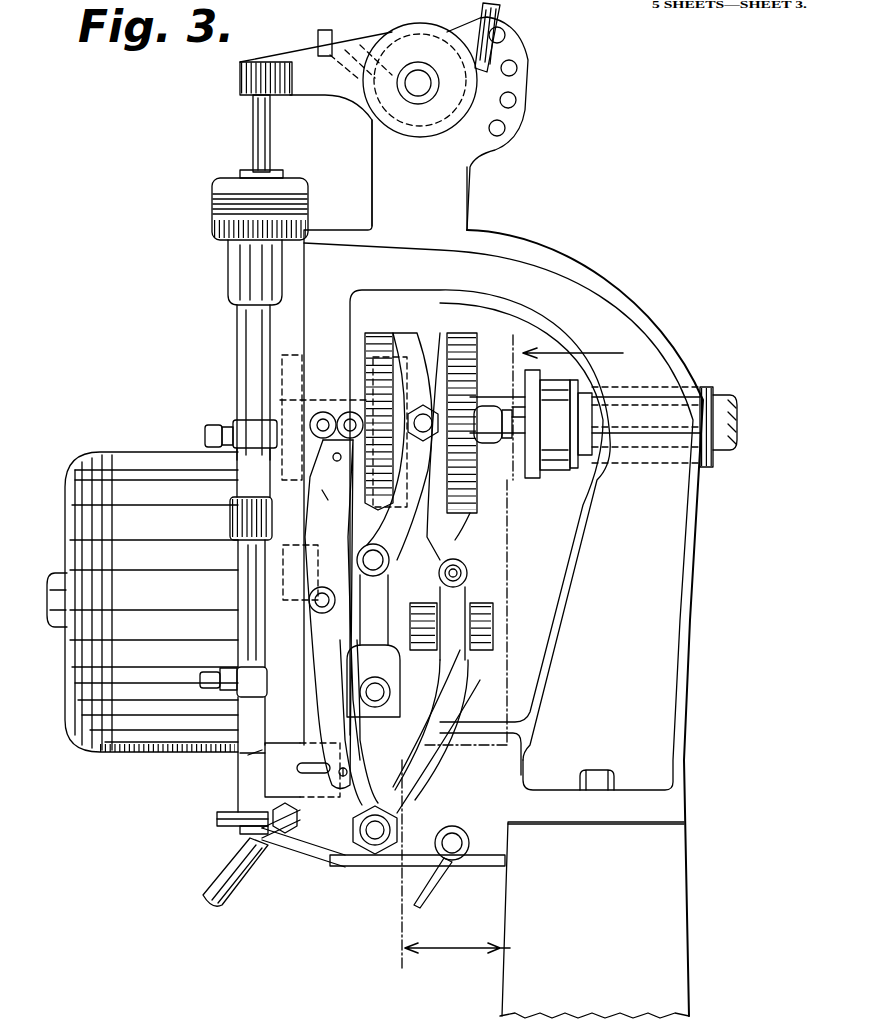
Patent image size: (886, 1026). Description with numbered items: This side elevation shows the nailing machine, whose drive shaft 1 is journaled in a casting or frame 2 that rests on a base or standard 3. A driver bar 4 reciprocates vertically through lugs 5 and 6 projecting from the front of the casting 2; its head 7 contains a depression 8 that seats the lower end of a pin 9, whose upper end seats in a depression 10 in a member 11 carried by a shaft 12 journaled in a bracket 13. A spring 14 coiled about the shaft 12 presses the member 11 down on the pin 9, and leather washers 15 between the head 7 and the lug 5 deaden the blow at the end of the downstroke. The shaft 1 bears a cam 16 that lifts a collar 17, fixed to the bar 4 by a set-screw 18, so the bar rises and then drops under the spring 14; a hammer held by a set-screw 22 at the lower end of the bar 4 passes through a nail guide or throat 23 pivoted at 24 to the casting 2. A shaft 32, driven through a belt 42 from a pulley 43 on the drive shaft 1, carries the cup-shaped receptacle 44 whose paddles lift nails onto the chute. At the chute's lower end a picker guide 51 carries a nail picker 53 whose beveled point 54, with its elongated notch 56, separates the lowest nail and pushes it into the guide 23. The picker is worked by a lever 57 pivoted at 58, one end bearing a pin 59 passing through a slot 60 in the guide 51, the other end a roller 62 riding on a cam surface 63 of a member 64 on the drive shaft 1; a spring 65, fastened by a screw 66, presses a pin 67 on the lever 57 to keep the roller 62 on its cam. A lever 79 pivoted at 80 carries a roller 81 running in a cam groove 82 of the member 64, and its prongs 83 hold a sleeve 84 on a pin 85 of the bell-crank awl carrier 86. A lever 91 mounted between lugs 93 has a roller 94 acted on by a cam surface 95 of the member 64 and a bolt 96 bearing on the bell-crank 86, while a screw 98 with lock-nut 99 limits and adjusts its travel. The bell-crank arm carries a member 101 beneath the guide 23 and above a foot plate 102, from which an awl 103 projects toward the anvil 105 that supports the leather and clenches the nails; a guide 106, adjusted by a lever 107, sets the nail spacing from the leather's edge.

The drive shaft 1 is at (730, 408).
The casting or frame 2 is at (471, 517).
The base or standard 3 is at (596, 857).
The rod or driver bar 4 is at (203, 325).
The lug 5 is at (232, 282).
The lug 6 is at (240, 520).
The head or enlargement 7 is at (232, 188).
The depression 8 is at (258, 183).
The pin 9 is at (270, 125).
The depression 10 is at (270, 62).
The member 11 is at (335, 82).
The shaft 12 is at (422, 92).
The bracket 13 is at (419, 175).
The spring 14 is at (500, 60).
The leather washers 15 is at (212, 208).
The cam 16 is at (310, 420).
The collar or member 17 is at (255, 458).
The set-screw 18 is at (205, 430).
The set-screw 22 is at (215, 672).
The nail guide or throat 23 is at (255, 754).
The pivot 24 is at (300, 575).
The shaft 32 is at (58, 600).
The belt 42 is at (585, 424).
The pulley 43 is at (578, 392).
The cup-shaped receptacle 44 is at (160, 730).
The picker guide 51 is at (302, 770).
The nail picker or plate 53 is at (317, 775).
The beveled point 54 is at (253, 753).
The elongated notch 56 is at (280, 740).
The lever 57 is at (332, 614).
The pivot 58 is at (324, 613).
The pin 59 is at (300, 822).
The slot 60 is at (340, 775).
The roller 62 is at (345, 412).
The cam surface 63 is at (320, 412).
The member 64 is at (390, 432).
The spring 65 is at (333, 457).
The screw or bolt 66 is at (317, 423).
The pin 67 is at (318, 503).
The lever 79 is at (373, 545).
The pivot 80 is at (385, 565).
The roller 81 is at (430, 410).
The cam groove 82 is at (395, 350).
The prongs 83 is at (413, 740).
The sleeve 84 is at (385, 676).
The pin 85 is at (380, 694).
The bell-crank awl carrier 86 is at (330, 850).
The lever 91 is at (451, 626).
The lugs 93 is at (423, 640).
The roller 94 is at (482, 410).
The cam surface 95 is at (460, 352).
The bolt 96 is at (372, 832).
The screw 98 is at (450, 560).
The lock-nut 99 is at (462, 573).
The member 101 is at (240, 812).
The foot plate 102 is at (225, 820).
The awl 103 is at (250, 832).
The anvil 105 is at (235, 860).
The guide 106 is at (365, 866).
The lever 107 is at (440, 870).